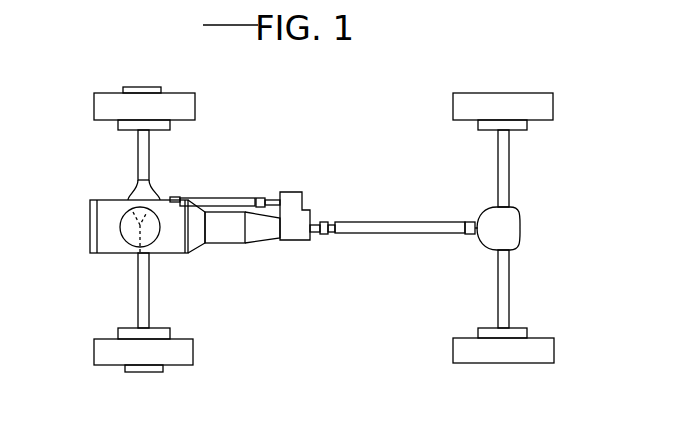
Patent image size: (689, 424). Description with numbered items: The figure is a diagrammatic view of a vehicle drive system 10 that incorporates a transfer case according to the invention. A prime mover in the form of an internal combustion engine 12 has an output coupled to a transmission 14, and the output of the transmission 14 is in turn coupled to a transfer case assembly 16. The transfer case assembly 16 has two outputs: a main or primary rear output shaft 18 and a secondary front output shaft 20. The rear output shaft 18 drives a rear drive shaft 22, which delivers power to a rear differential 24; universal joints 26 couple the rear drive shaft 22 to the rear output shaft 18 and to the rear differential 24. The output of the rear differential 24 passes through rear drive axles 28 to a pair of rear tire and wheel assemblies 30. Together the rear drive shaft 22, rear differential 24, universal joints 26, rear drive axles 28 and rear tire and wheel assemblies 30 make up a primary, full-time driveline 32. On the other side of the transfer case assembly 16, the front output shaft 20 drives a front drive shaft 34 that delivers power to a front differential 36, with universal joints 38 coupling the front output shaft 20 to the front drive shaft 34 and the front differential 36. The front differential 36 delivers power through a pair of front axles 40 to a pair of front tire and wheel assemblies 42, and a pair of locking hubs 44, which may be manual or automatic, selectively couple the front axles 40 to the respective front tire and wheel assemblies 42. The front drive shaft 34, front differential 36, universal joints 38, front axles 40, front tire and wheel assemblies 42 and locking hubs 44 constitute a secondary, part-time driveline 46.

The vehicle drive system 10 is at (313, 342).
The internal combustion engine 12 is at (107, 238).
The transmission 14 is at (252, 235).
The transfer case assembly 16 is at (310, 195).
The rear output shaft 18 is at (317, 234).
The front output shaft 20 is at (270, 236).
The rear drive shaft 22 is at (392, 233).
The rear differential 24 is at (517, 222).
The universal joints 26 is at (333, 208).
The rear drive axles 28 is at (510, 163).
The rear tire and wheel assemblies 30 is at (528, 93).
The primary driveline 32 is at (443, 136).
The front drive shaft 34 is at (220, 200).
The front differential 36 is at (137, 192).
The universal joints 38 is at (173, 198).
The front axles 40 is at (138, 147).
The front tire and wheel assemblies 42 is at (190, 103).
The locking hubs 44 is at (133, 87).
The secondary driveline 46 is at (224, 118).